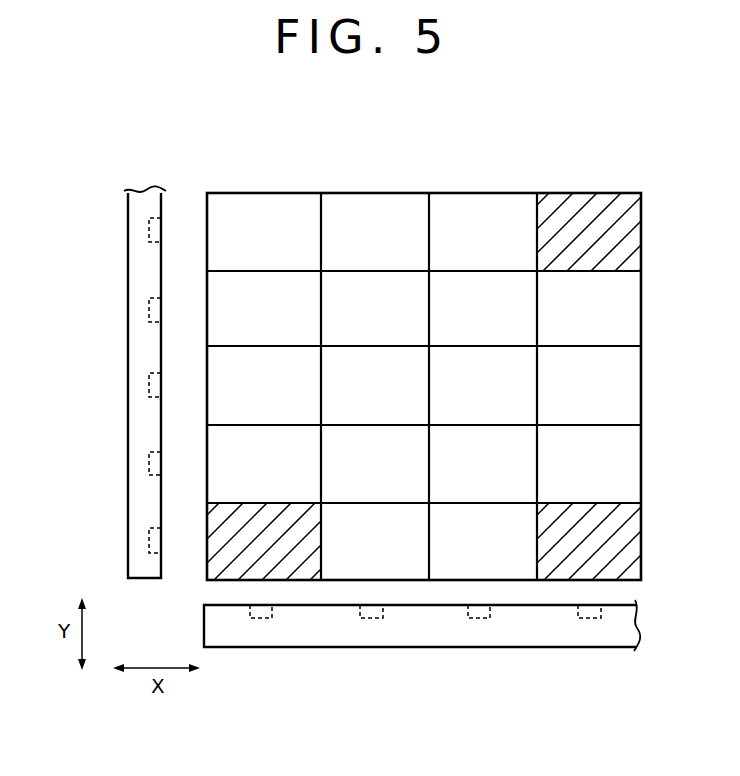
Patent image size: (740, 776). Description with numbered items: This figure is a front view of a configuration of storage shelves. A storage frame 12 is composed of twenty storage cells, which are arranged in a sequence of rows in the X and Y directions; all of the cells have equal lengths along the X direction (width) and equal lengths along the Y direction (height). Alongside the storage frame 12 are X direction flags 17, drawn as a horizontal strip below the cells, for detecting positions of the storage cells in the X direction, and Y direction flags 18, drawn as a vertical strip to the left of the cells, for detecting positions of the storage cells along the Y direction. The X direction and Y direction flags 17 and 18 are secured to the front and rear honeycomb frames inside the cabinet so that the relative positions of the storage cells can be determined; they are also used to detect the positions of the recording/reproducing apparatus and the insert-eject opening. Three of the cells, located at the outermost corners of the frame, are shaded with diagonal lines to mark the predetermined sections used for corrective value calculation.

The storage frame 12 is at (489, 189).
The X direction flags 17 is at (316, 655).
The Y direction flags 18 is at (125, 308).